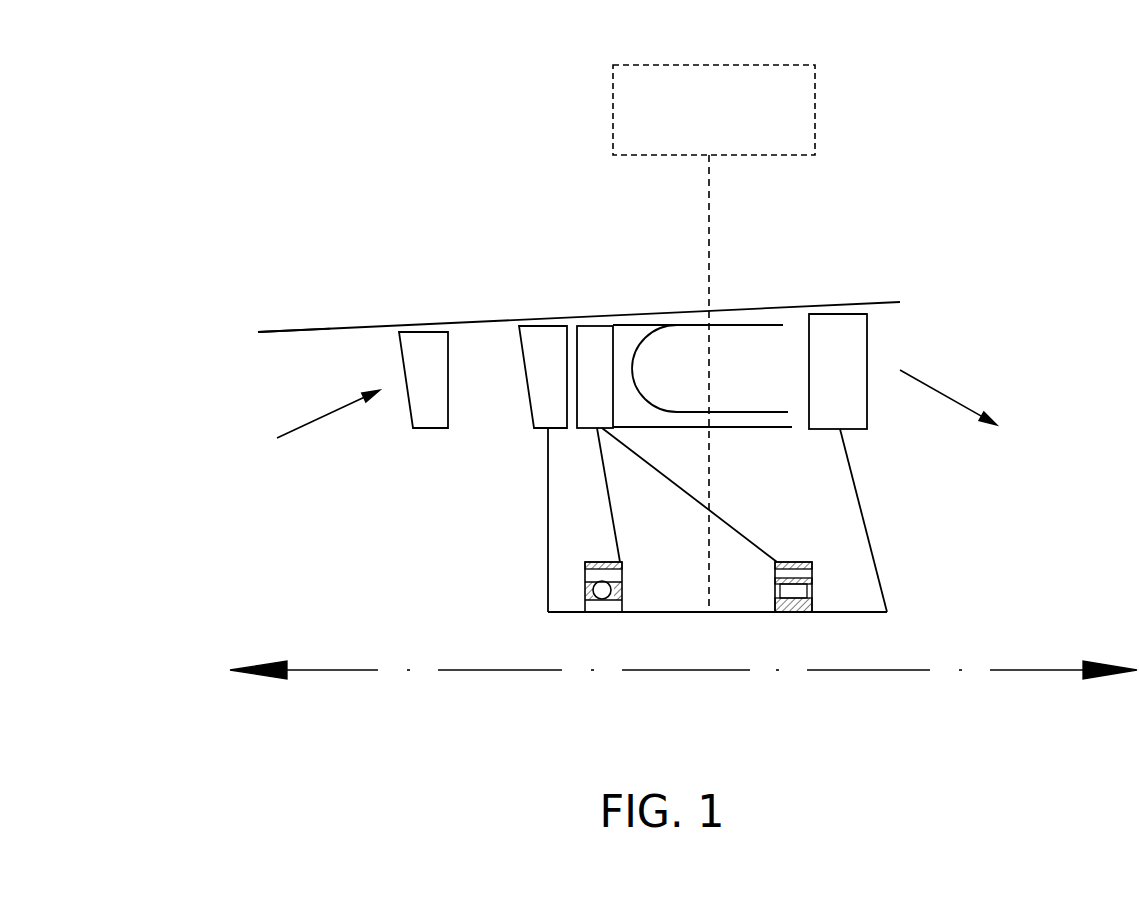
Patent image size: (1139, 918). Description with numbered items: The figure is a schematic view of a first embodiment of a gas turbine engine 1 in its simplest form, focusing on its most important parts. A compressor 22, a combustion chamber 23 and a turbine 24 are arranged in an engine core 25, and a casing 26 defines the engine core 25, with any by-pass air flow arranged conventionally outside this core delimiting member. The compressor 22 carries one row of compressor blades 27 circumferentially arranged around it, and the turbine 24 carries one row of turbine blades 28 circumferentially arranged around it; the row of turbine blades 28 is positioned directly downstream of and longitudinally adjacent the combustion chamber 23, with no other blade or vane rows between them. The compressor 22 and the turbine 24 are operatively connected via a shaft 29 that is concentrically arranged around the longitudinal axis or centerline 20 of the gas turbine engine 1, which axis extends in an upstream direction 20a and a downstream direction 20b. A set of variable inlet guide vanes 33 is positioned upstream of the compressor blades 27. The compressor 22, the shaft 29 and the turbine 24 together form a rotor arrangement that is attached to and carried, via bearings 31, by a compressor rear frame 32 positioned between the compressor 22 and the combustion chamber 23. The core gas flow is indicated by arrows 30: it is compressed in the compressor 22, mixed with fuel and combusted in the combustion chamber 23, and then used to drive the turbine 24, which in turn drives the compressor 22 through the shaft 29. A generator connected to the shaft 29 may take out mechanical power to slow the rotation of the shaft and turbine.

The gas turbine engine 1 is at (307, 126).
The longitudinal axis 20 is at (648, 670).
The upstream direction 20a is at (320, 672).
The downstream direction 20b is at (1052, 672).
The compressor 22 is at (462, 281).
The combustion chamber 23 is at (724, 362).
The turbine 24 is at (1018, 347).
The engine core 25 is at (320, 375).
The casing 26 is at (290, 328).
The compressor blades 27 is at (547, 352).
The turbine blades 28 is at (842, 350).
The shaft 29 is at (709, 612).
The core gas flow 30 is at (310, 427).
The bearings 31 is at (600, 588).
The compressor rear frame 32 is at (598, 345).
The variable inlet guide vanes 33 is at (430, 357).